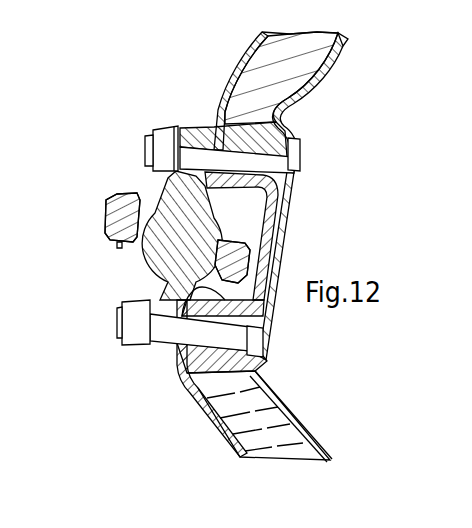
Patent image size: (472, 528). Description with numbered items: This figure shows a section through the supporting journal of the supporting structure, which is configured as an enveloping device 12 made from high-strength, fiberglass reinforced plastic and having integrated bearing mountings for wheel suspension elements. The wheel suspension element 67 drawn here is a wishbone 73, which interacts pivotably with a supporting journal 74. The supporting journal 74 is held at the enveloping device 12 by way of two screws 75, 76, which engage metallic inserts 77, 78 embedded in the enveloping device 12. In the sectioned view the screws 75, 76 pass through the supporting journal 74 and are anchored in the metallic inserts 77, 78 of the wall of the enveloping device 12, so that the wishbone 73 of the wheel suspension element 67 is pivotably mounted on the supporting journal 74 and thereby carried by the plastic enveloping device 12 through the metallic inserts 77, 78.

The enveloping device 12 is at (212, 437).
The wheel suspension element 67 is at (105, 247).
The wishbone 73 is at (108, 212).
The supporting journal 74 is at (130, 277).
The screw 75 is at (128, 346).
The screw 76 is at (163, 128).
The metallic insert 77 is at (252, 374).
The metallic insert 78 is at (288, 419).